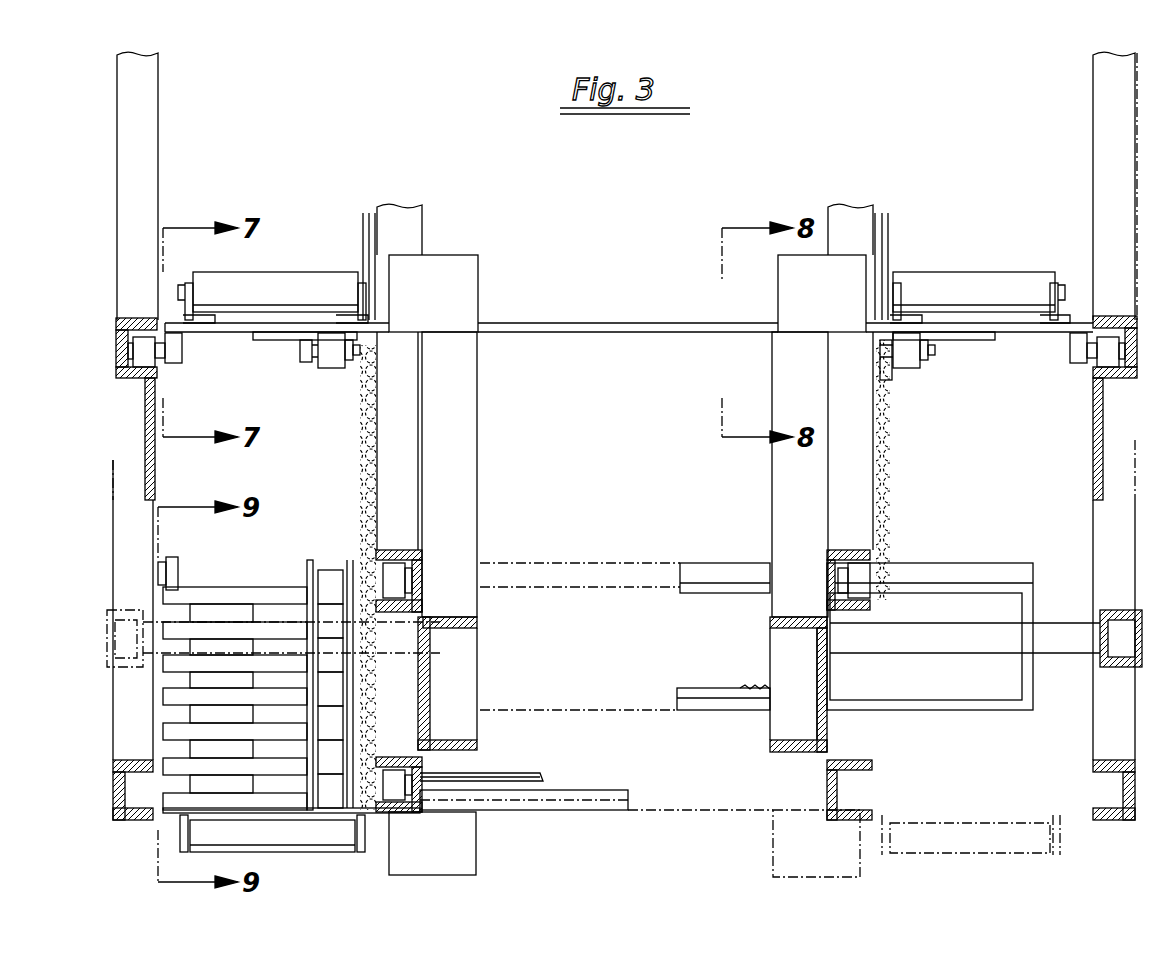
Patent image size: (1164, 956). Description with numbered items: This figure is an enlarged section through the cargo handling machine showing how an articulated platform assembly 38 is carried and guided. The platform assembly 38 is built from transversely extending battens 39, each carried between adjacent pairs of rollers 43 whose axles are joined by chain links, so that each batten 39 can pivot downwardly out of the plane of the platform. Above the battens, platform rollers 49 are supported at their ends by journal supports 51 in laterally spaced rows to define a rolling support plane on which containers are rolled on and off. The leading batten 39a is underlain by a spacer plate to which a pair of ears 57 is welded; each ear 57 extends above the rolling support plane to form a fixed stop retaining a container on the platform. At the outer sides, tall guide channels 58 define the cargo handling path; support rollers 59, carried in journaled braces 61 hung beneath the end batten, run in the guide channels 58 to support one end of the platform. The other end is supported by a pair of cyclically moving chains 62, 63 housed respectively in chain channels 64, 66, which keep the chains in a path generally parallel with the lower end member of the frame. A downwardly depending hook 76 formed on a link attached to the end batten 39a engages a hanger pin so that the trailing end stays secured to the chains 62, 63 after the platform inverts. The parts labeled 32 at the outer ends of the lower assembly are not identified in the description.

The piston cylinder 32 is at (107, 625).
The articulated platform assembly 38 is at (552, 325).
The batten 39 is at (620, 325).
The leading batten 39a is at (555, 812).
The roller 43 is at (330, 368).
The platform roller 49 is at (272, 290).
The journal support 51 is at (185, 305).
The ear 57 is at (444, 296).
The guide channel 58 is at (140, 132).
The support roller 59 is at (144, 368).
The journaled brace 61 is at (182, 348).
The chain 62 is at (380, 763).
The chain 63 is at (855, 605).
The chain channel 64 is at (410, 235).
The chain channel 66 is at (850, 210).
The hook 76 is at (352, 370).